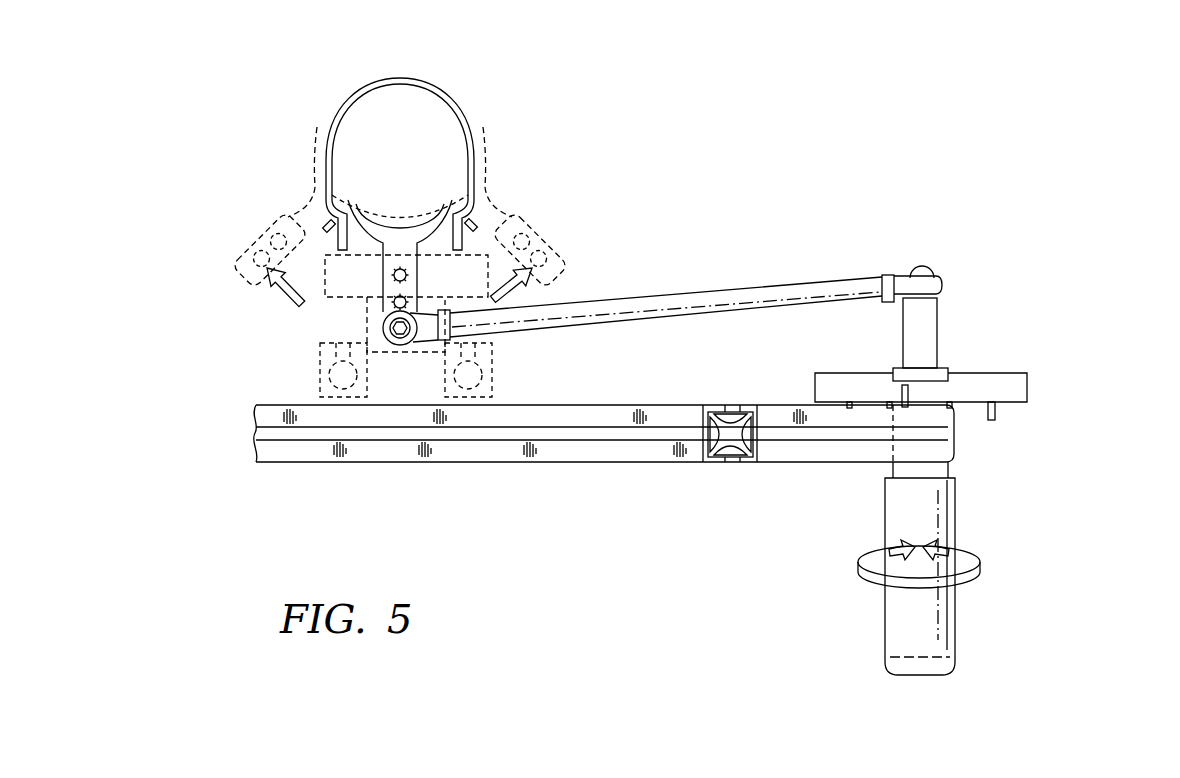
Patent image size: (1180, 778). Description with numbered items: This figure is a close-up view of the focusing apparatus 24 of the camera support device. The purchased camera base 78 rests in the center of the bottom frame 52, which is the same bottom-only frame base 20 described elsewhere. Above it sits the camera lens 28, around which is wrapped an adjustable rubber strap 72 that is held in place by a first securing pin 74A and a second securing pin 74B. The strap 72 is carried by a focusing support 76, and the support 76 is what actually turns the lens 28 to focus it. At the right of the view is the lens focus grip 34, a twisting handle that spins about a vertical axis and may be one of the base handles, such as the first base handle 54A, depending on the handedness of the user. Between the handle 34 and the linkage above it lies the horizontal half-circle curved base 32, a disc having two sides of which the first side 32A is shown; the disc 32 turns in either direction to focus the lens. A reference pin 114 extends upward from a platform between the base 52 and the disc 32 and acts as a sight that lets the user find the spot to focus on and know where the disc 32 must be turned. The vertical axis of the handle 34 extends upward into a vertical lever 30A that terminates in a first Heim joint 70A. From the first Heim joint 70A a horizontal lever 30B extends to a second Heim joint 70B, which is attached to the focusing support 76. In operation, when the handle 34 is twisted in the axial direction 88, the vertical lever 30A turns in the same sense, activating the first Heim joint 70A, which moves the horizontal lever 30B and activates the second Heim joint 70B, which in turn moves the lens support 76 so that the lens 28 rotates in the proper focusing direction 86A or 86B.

The frame base 20 is at (604, 465).
The focusing apparatus 24 is at (773, 410).
The camera lens 28 is at (416, 130).
The vertical lever 30A is at (903, 333).
The horizontal lever 30B is at (745, 288).
The curved base 32 is at (1040, 378).
The first side of dome 32A is at (975, 383).
The lens focus grip 34 is at (968, 512).
The base of frame 52 is at (604, 408).
The first base handle 54A is at (895, 615).
The first Heim joint 70A is at (898, 280).
The second Heim joint 70B is at (424, 334).
The adjustable rubber strap 72 is at (362, 92).
The first securing pin 74A is at (495, 222).
The second securing pin 74B is at (305, 222).
The focusing support 76 is at (397, 232).
The camera base 78 is at (493, 262).
The first direction focusing lens 86A is at (524, 284).
The second direction focusing lens 86B is at (270, 290).
The twist direction on focusing handle 88 is at (975, 578).
The reference pin 114 is at (900, 388).